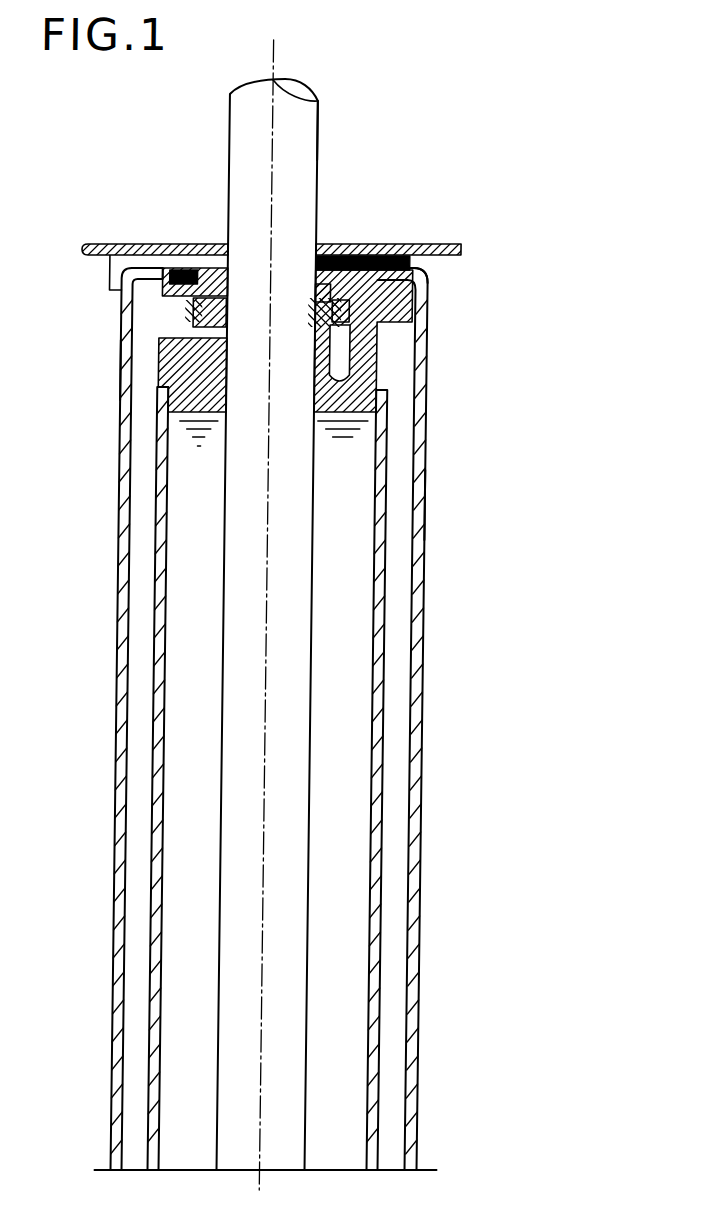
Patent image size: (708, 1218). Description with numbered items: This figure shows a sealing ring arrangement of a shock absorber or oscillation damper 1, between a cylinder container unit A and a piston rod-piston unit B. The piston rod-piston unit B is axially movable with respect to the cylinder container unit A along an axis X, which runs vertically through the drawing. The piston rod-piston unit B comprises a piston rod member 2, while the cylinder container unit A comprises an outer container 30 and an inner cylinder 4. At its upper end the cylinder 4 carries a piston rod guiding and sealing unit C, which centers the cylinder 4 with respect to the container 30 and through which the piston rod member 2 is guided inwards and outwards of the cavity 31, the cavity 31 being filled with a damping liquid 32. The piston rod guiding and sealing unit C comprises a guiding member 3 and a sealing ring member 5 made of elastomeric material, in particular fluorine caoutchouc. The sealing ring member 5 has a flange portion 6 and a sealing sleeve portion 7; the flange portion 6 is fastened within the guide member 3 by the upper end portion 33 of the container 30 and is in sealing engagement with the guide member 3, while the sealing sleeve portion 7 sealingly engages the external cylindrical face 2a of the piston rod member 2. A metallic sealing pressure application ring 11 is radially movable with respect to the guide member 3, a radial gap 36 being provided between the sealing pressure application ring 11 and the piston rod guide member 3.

The hydraulic shock absorber 1 is at (128, 366).
The piston rod member 2 is at (301, 177).
The external cylindrical face 2a is at (229, 150).
The guiding member 3 is at (371, 369).
The cylinder 4 is at (166, 491).
The sealing ring member 5 is at (430, 285).
The flange portion 6 is at (160, 252).
The sealing sleeve portion 7 is at (178, 333).
The sealing pressure application ring 11 is at (201, 256).
The container 30 is at (425, 609).
The cavity 31 is at (362, 826).
The damping liquid 32 is at (364, 441).
The upper end portion 33 is at (406, 259).
The radial gap 36 is at (193, 320).
The cylinder container unit A is at (432, 503).
The piston rod-piston unit B is at (320, 129).
The piston rod guiding and sealing unit C is at (423, 316).
The axis X is at (276, 733).